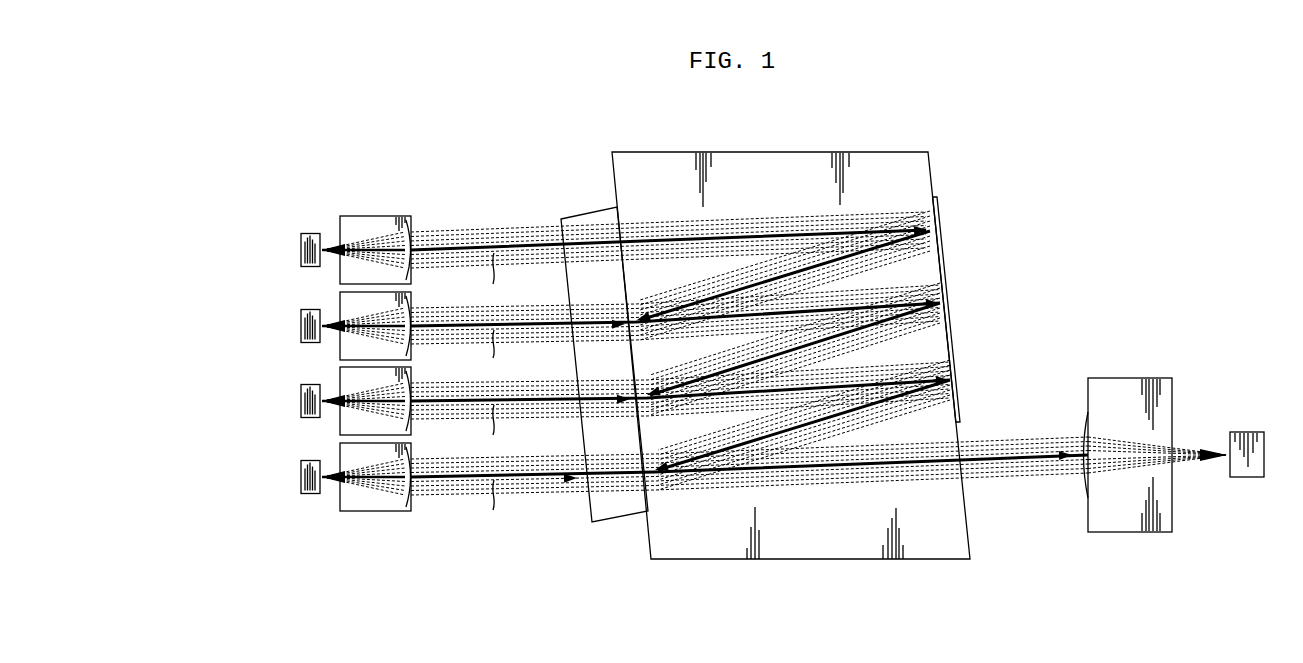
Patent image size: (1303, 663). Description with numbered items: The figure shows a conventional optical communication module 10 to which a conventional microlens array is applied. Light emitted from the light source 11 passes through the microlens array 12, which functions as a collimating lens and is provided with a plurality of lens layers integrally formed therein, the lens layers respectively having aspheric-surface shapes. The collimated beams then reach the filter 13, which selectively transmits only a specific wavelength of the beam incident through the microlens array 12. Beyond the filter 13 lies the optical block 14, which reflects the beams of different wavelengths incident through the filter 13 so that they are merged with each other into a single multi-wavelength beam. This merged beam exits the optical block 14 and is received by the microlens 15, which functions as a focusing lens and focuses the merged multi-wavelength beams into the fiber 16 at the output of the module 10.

The optical communication module 10 is at (358, 138).
The light source 11 is at (301, 477).
The microlens array 12 is at (388, 503).
The filter 13 is at (613, 513).
The optical block 14 is at (812, 545).
The microlens 15 is at (1128, 527).
The fiber 16 is at (1248, 477).